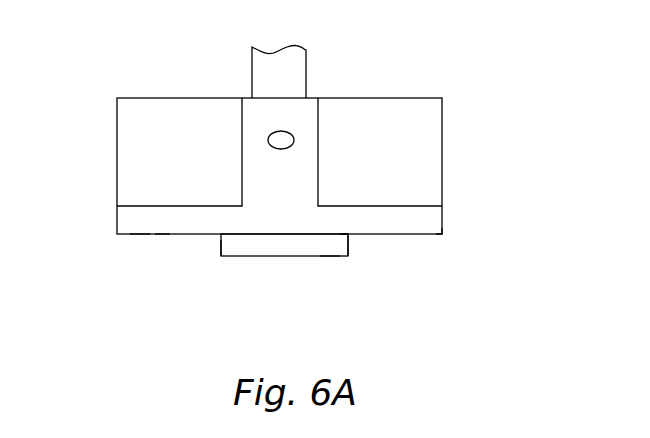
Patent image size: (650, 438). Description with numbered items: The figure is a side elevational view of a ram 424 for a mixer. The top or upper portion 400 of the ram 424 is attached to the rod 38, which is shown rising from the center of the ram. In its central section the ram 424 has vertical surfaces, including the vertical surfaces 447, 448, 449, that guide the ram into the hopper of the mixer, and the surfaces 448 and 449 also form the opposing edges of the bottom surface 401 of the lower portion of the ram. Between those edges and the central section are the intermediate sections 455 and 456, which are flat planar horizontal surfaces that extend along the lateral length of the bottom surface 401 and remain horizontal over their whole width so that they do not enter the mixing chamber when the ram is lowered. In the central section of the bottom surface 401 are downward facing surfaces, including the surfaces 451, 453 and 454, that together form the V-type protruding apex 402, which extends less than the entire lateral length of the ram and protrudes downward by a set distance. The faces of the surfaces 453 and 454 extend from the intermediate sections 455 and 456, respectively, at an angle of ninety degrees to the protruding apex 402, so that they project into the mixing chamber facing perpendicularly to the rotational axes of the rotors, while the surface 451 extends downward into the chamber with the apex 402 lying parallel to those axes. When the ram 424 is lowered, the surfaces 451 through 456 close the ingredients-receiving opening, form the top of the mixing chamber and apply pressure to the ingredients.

The top or upper portion 400 is at (373, 98).
The rod 38 is at (252, 62).
The ram 424 is at (156, 78).
The vertical surface 449 is at (117, 132).
The vertical surface 448 is at (442, 131).
The vertical surface 447 is at (415, 210).
The intermediate section 455 is at (440, 237).
The intermediate section 456 is at (143, 234).
The bottom surface 401 is at (162, 236).
The protruding apex 402 is at (303, 256).
The downward facing surface 453 is at (221, 248).
The downward facing surface 454 is at (348, 243).
The downward facing surface 451 is at (325, 247).